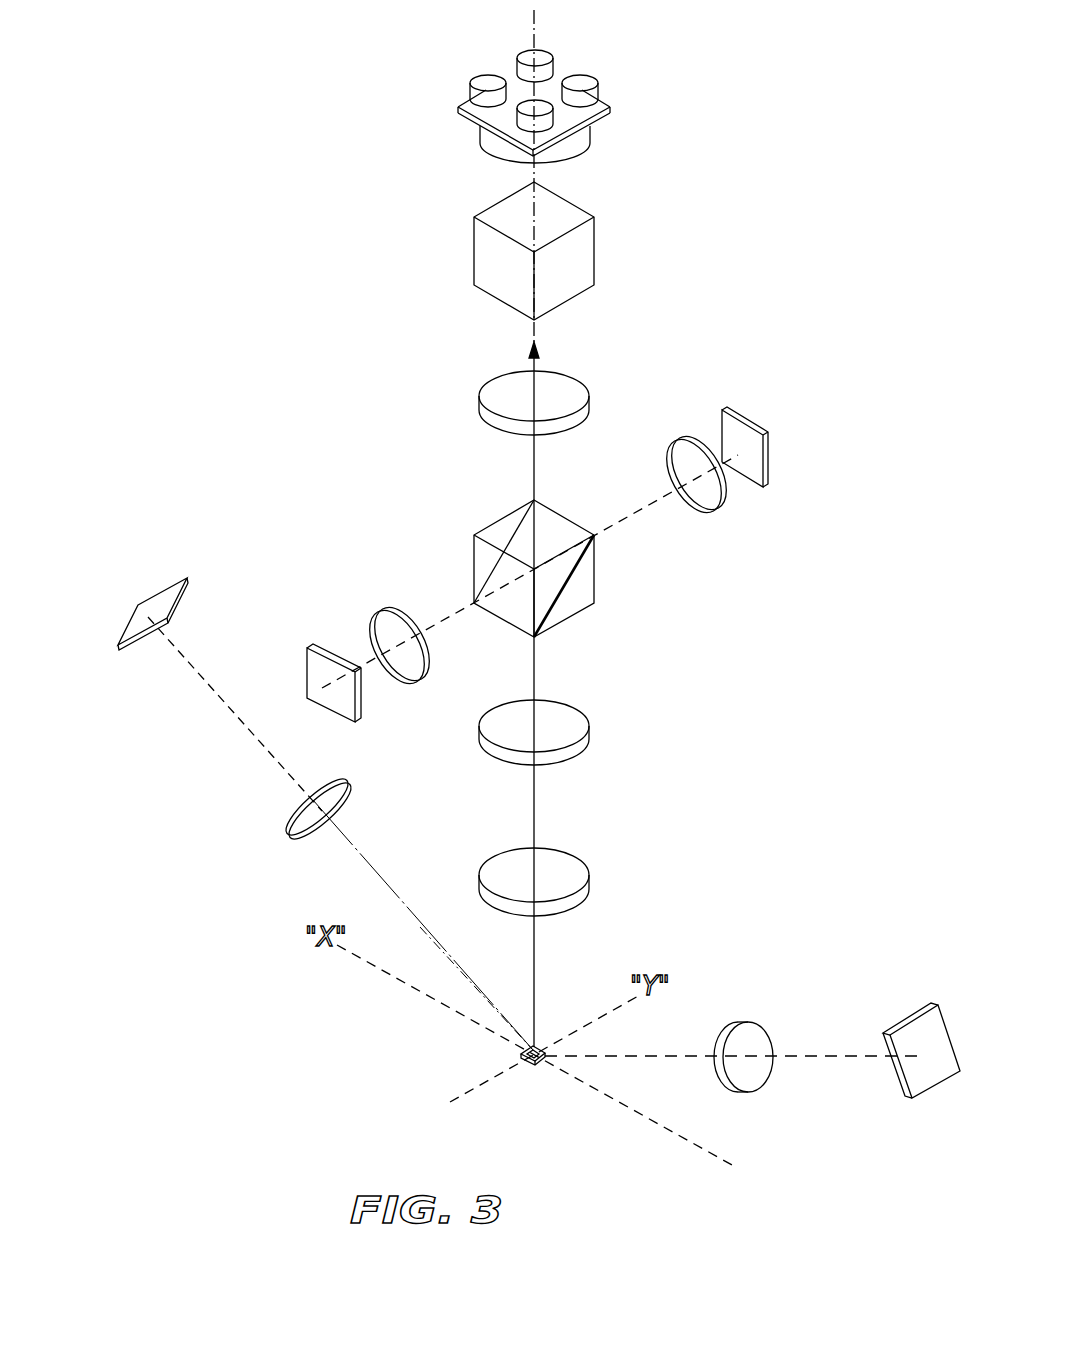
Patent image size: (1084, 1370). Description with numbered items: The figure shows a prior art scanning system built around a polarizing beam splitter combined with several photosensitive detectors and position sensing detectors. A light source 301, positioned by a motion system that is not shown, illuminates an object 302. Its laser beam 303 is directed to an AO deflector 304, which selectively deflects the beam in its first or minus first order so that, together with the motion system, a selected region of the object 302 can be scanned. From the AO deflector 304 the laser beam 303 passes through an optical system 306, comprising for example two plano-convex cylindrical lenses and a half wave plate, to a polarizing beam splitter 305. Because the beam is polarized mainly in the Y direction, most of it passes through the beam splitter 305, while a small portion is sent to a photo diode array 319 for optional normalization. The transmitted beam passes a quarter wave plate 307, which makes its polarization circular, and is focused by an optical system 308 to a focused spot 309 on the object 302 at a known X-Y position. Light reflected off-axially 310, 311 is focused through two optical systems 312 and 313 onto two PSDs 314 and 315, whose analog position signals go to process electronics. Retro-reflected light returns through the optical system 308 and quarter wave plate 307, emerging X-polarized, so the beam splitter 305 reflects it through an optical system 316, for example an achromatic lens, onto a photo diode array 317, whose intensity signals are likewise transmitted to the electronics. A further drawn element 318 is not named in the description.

The light source 301 is at (457, 108).
The object 302 is at (537, 1063).
The laser beam 303 is at (718, 1157).
The AO deflector 304 is at (474, 258).
The polarizing beam splitter 305 is at (474, 587).
The optical system 306 is at (590, 400).
The quarter wave plate 307 is at (589, 732).
The optical system 308 is at (589, 880).
The focused spot 309 is at (521, 1053).
The off-axially reflected light 310 is at (419, 922).
The off-axially reflected light 311 is at (652, 1056).
The optical system 312 is at (315, 792).
The optical system 313 is at (772, 1045).
The PSD 314 is at (133, 612).
The PSD 315 is at (905, 1025).
The optical system 316 is at (386, 613).
The photo diode array 317 is at (309, 648).
The lens 318 is at (722, 497).
The photo diode array 319 is at (773, 452).